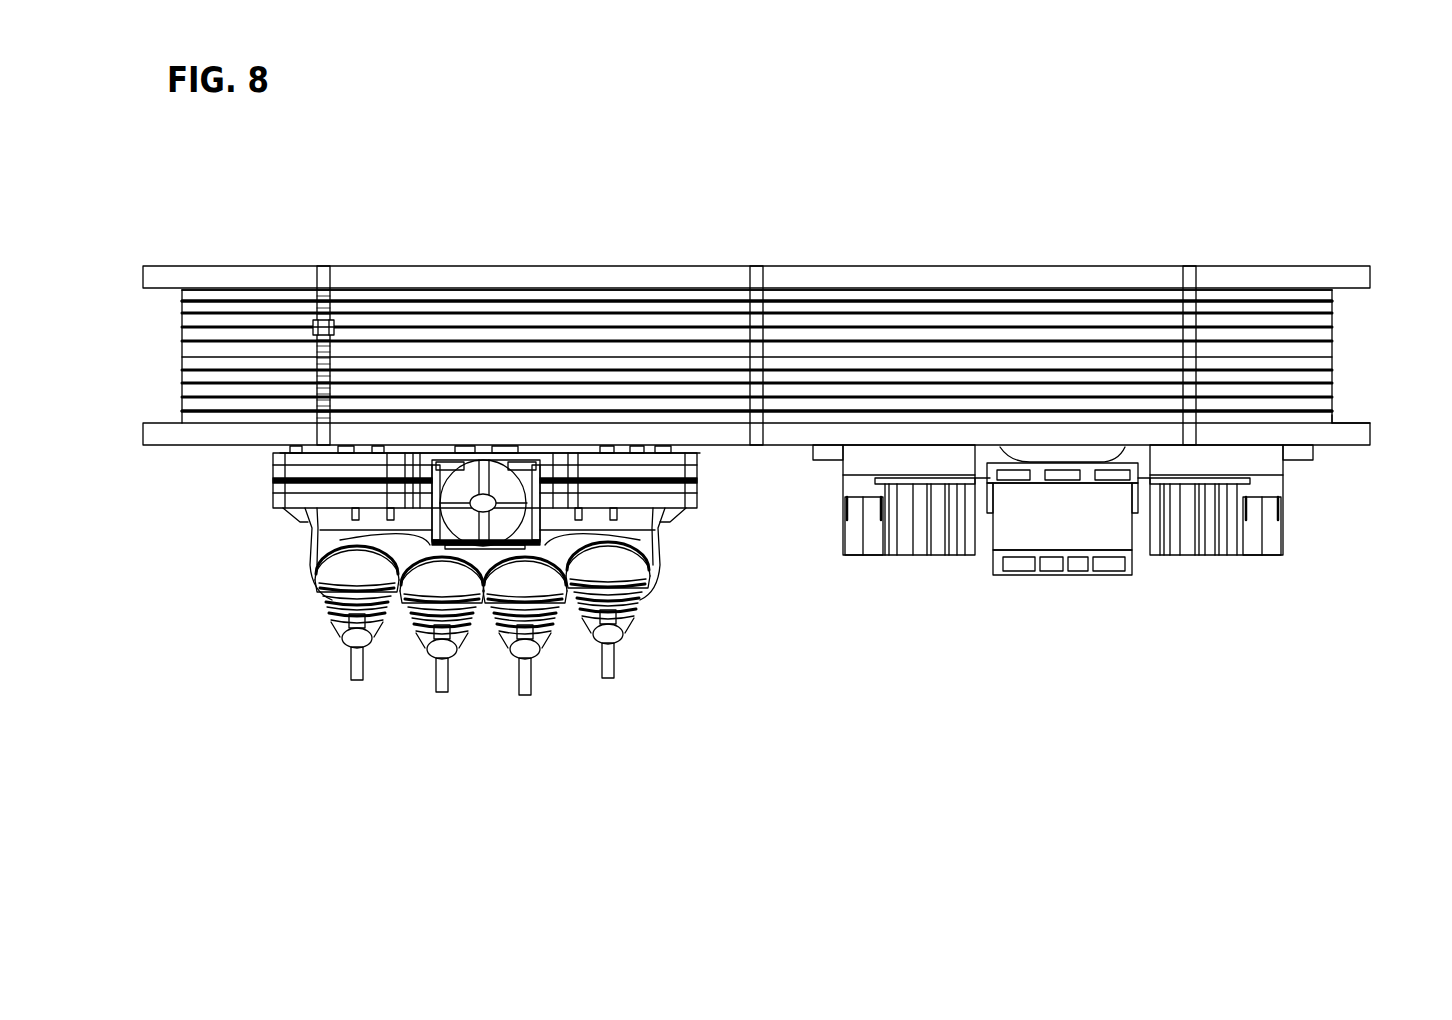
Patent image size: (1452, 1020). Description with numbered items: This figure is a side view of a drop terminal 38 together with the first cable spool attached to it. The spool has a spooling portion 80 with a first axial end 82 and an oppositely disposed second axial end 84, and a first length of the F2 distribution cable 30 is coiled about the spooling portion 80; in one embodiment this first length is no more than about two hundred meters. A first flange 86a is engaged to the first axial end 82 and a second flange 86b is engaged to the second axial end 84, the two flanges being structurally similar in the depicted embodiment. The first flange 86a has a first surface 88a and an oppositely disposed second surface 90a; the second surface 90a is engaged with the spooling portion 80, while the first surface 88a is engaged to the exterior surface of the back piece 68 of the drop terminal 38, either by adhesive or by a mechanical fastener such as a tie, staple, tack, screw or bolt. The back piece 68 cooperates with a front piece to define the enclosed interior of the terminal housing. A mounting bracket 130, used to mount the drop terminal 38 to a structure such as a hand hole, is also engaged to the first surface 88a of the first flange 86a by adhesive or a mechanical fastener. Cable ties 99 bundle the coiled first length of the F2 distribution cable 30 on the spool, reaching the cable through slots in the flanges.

The F2 distribution cable 30 is at (667, 295).
The cable ties 99 is at (320, 322).
The second flange 86b is at (852, 260).
The first flange 86a is at (777, 450).
The second axial end 84 is at (1335, 292).
The spooling portion 80 is at (1343, 345).
The first axial end 82 is at (1337, 415).
The second surface 90a is at (1358, 423).
The first surface 88a is at (1352, 447).
The back piece 68 is at (273, 460).
The drop terminal 38 is at (636, 632).
The mounting bracket 130 is at (934, 560).